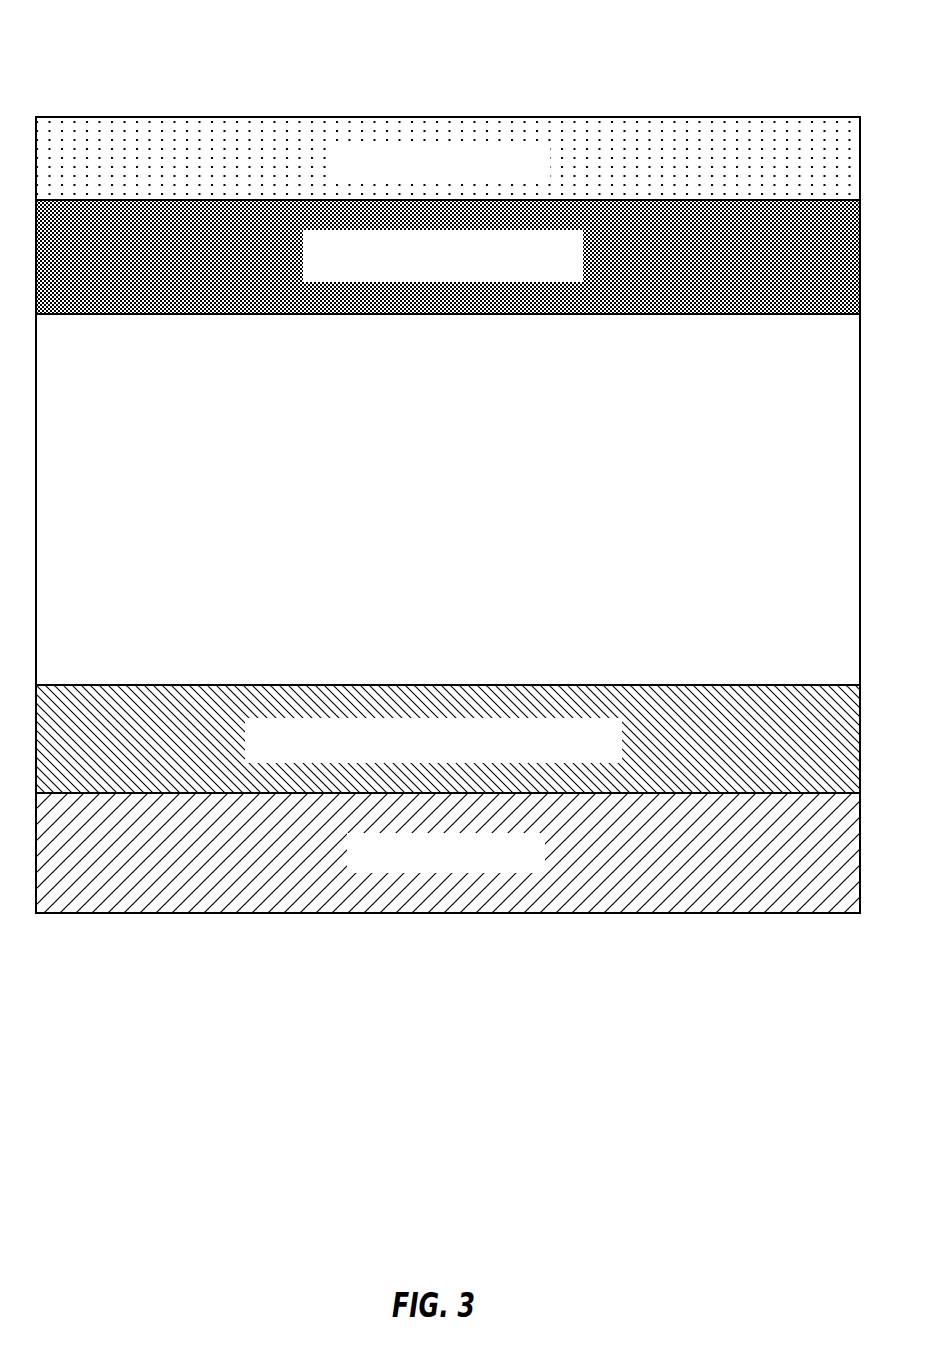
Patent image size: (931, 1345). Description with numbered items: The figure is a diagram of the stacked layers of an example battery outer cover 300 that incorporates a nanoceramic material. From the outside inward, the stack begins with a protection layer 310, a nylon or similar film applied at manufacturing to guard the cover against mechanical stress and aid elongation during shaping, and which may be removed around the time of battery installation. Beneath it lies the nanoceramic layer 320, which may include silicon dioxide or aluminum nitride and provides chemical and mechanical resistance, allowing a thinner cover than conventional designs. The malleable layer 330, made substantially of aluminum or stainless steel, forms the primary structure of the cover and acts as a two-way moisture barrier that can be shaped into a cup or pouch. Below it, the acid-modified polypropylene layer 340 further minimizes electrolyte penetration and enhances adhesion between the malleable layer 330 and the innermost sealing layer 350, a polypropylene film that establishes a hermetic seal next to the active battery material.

The battery outer cover 300 is at (764, 64).
The protection layer 310 is at (532, 172).
The nanoceramic layer 320 is at (547, 267).
The malleable layer 330 is at (532, 524).
The acid-modified polypropylene layer 340 is at (607, 752).
The sealing layer 350 is at (522, 866).